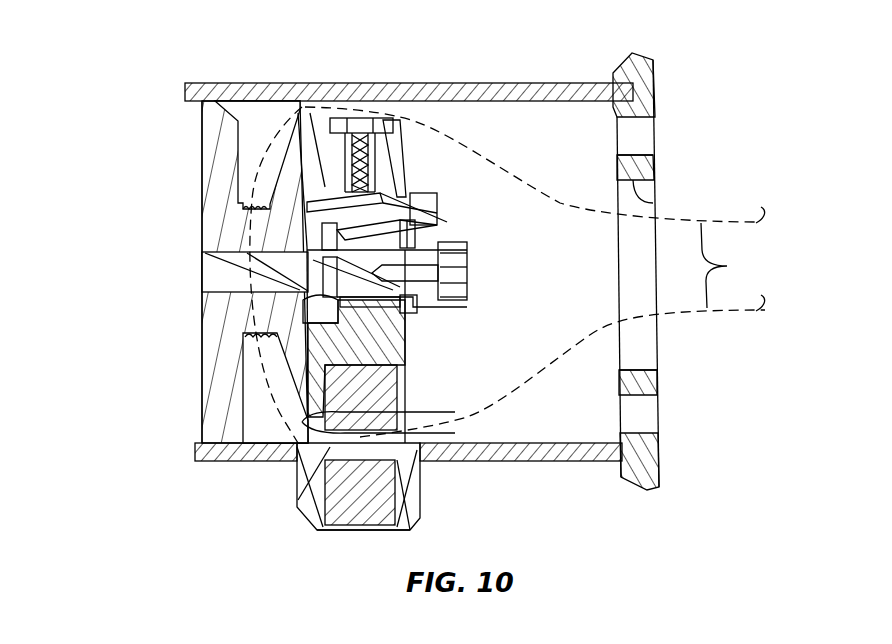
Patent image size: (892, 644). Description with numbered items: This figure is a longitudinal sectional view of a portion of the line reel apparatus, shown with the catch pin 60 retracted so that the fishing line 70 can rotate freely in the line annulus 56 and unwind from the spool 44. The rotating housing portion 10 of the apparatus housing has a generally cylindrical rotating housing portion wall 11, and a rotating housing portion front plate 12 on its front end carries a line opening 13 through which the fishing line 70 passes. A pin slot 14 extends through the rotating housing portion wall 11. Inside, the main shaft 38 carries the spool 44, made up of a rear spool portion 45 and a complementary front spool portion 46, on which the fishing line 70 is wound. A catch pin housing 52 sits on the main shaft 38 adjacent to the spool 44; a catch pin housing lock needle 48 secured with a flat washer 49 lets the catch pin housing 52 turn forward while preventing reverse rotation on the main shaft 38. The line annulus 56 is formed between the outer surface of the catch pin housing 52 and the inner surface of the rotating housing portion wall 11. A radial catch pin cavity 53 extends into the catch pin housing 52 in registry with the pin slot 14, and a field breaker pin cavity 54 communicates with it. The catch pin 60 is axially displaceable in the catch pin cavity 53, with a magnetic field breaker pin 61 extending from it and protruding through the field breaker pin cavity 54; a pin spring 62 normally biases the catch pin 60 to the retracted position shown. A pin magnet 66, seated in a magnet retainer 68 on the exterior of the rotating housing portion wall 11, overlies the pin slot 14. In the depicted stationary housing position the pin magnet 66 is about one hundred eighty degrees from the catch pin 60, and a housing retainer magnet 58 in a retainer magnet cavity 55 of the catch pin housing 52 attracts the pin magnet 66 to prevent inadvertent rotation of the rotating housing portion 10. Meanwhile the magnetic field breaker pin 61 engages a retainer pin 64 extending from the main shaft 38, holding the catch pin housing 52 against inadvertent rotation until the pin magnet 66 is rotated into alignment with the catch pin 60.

The rotating housing portion 10 is at (473, 80).
The rotating housing portion wall 11 is at (413, 82).
The rotating housing portion front plate 12 is at (654, 73).
The line opening 13 is at (654, 203).
The pin slot 14 is at (300, 505).
The main shaft 38 is at (200, 268).
The spool 44 is at (190, 272).
The rear spool portion 45 is at (220, 172).
The front spool portion 46 is at (257, 186).
The catch pin housing lock needle 48 is at (400, 343).
The flat washer 49 is at (410, 312).
The catch pin housing 52 is at (440, 418).
The catch pin cavity 53 is at (372, 135).
The field breaker pin cavity 54 is at (410, 198).
The retainer magnet cavity 55 is at (390, 378).
The line annulus 56 is at (290, 450).
The housing retainer magnet 58 is at (330, 390).
The catch pin 60 is at (392, 133).
The magnetic field breaker pin 61 is at (420, 228).
The pin spring 62 is at (300, 101).
The retainer pin 64 is at (440, 240).
The pin magnet 66 is at (330, 530).
The magnet retainer 68 is at (413, 480).
The fishing line 70 is at (735, 259).